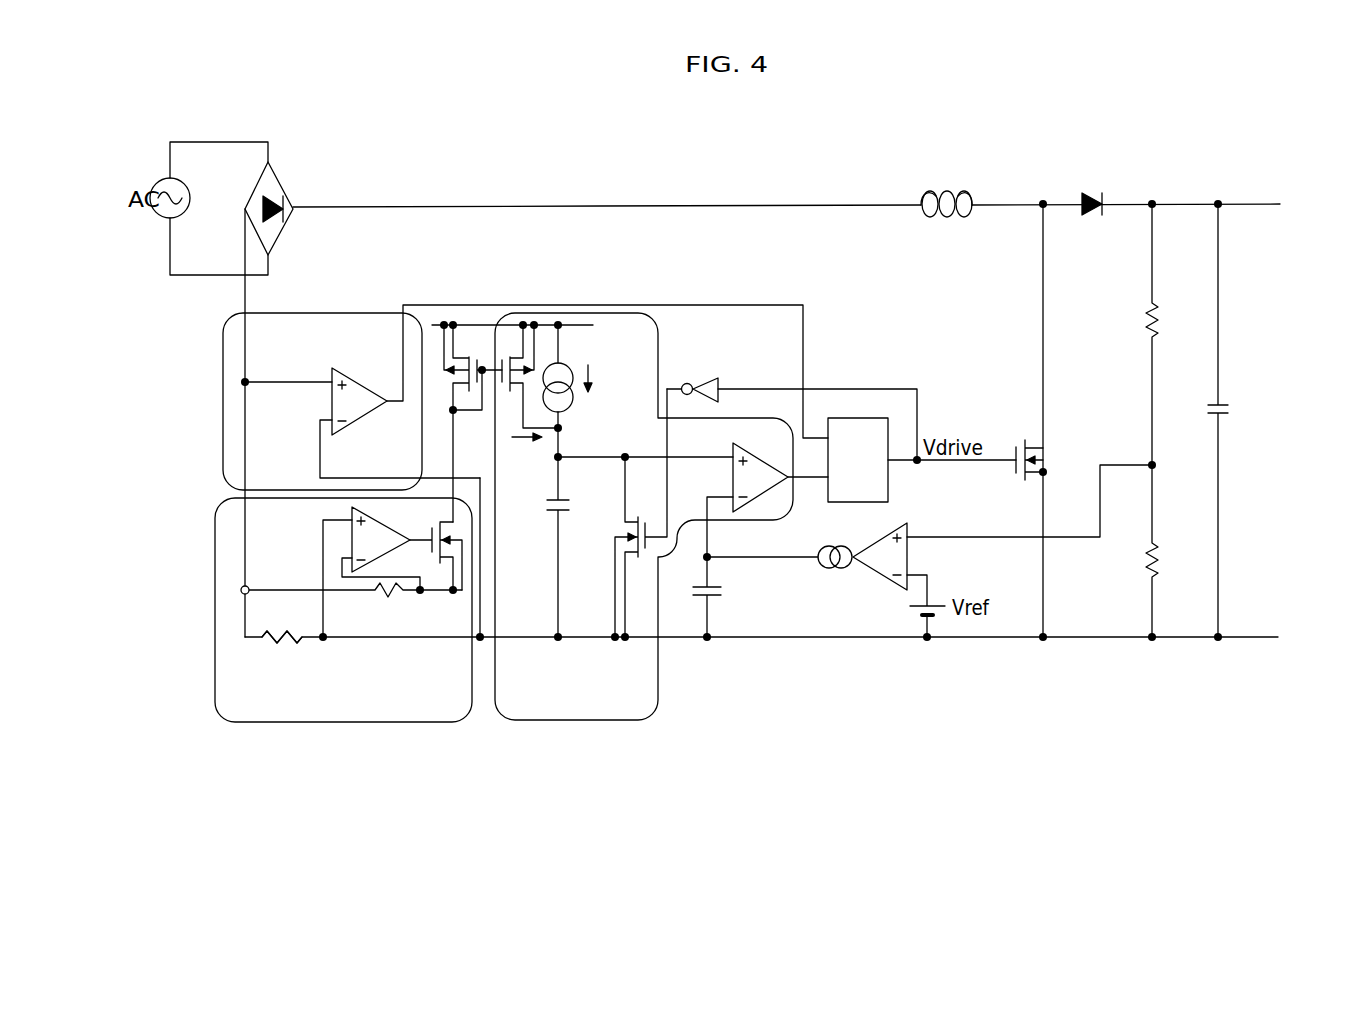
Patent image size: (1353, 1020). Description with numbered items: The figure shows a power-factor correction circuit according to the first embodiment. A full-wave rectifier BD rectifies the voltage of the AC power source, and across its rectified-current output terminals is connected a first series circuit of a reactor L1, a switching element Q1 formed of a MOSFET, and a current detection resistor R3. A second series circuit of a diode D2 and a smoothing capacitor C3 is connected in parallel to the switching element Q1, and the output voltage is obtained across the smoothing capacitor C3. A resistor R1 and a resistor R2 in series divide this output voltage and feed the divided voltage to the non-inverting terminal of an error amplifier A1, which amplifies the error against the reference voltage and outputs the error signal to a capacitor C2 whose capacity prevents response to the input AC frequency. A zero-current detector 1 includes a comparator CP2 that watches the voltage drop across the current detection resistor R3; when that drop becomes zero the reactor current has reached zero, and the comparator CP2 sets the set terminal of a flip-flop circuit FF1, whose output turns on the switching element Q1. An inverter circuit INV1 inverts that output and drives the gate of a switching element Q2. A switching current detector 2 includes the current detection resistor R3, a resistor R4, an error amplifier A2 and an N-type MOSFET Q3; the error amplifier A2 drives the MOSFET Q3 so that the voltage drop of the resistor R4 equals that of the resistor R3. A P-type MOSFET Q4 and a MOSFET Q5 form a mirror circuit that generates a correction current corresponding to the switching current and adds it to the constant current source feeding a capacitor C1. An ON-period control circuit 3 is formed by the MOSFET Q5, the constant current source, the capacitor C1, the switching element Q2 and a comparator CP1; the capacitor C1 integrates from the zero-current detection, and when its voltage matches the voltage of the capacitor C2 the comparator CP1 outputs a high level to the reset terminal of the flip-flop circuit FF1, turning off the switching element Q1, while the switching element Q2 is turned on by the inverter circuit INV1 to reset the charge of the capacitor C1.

The zero-current detector 1 is at (525, 374).
The switching current detector 2 is at (343, 640).
The ON-period control circuit 3 is at (676, 545).
The full-wave rectifier BD is at (286, 186).
The reactor L1 is at (946, 190).
The diode D2 is at (1091, 189).
The resistor R1 is at (1166, 334).
The resistor R2 is at (1166, 551).
The current detection resistor R3 is at (282, 625).
The resistor R4 is at (353, 604).
The capacitor C1 is at (545, 547).
The capacitor C2 is at (719, 597).
The smoothing capacitor C3 is at (1236, 420).
The switching element Q1 is at (1046, 420).
The switching element Q2 is at (626, 513).
The N-type MOSFET Q3 is at (436, 544).
The P-type MOSFET Q4 is at (473, 423).
The MOSFET Q5 is at (529, 378).
The comparator CP1 is at (765, 491).
The comparator CP2 is at (340, 285).
The flip-flop circuit FF1 is at (922, 447).
The inverter circuit INV1 is at (794, 408).
The error amplifier A1 is at (985, 551).
The error amplifier A2 is at (371, 567).